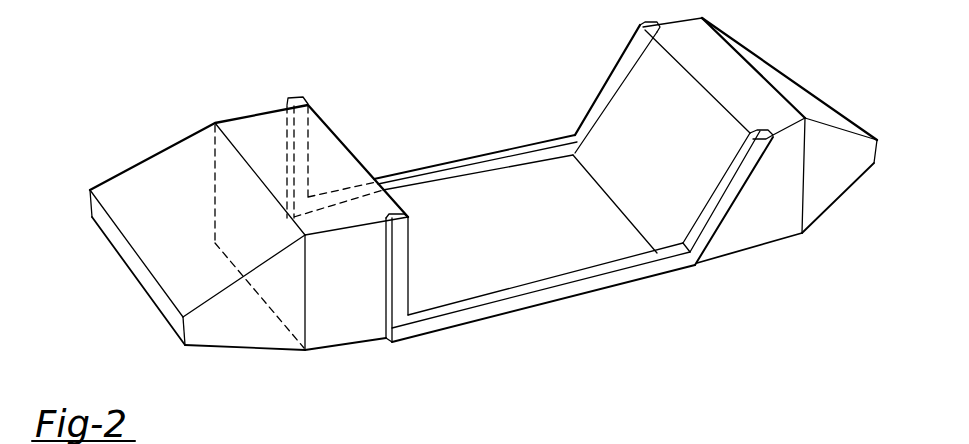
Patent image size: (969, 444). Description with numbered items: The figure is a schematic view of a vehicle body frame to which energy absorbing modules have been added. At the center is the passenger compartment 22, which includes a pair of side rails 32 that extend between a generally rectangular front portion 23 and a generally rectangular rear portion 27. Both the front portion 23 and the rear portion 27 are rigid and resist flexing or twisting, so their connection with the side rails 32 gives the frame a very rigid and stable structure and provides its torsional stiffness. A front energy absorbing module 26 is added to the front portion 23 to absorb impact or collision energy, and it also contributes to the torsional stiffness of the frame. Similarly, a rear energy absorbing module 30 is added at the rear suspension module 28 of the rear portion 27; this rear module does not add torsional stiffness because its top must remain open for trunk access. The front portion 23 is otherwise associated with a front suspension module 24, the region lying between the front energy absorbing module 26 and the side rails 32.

The passenger compartment 22 is at (492, 363).
The front portion 23 is at (250, 102).
The front suspension module 24 is at (364, 323).
The front energy absorbing module 26 is at (246, 330).
The rear portion 27 is at (748, 51).
The rear suspension module 28 is at (756, 238).
The rear energy absorbing module 30 is at (830, 191).
The side rails 32 is at (448, 162).